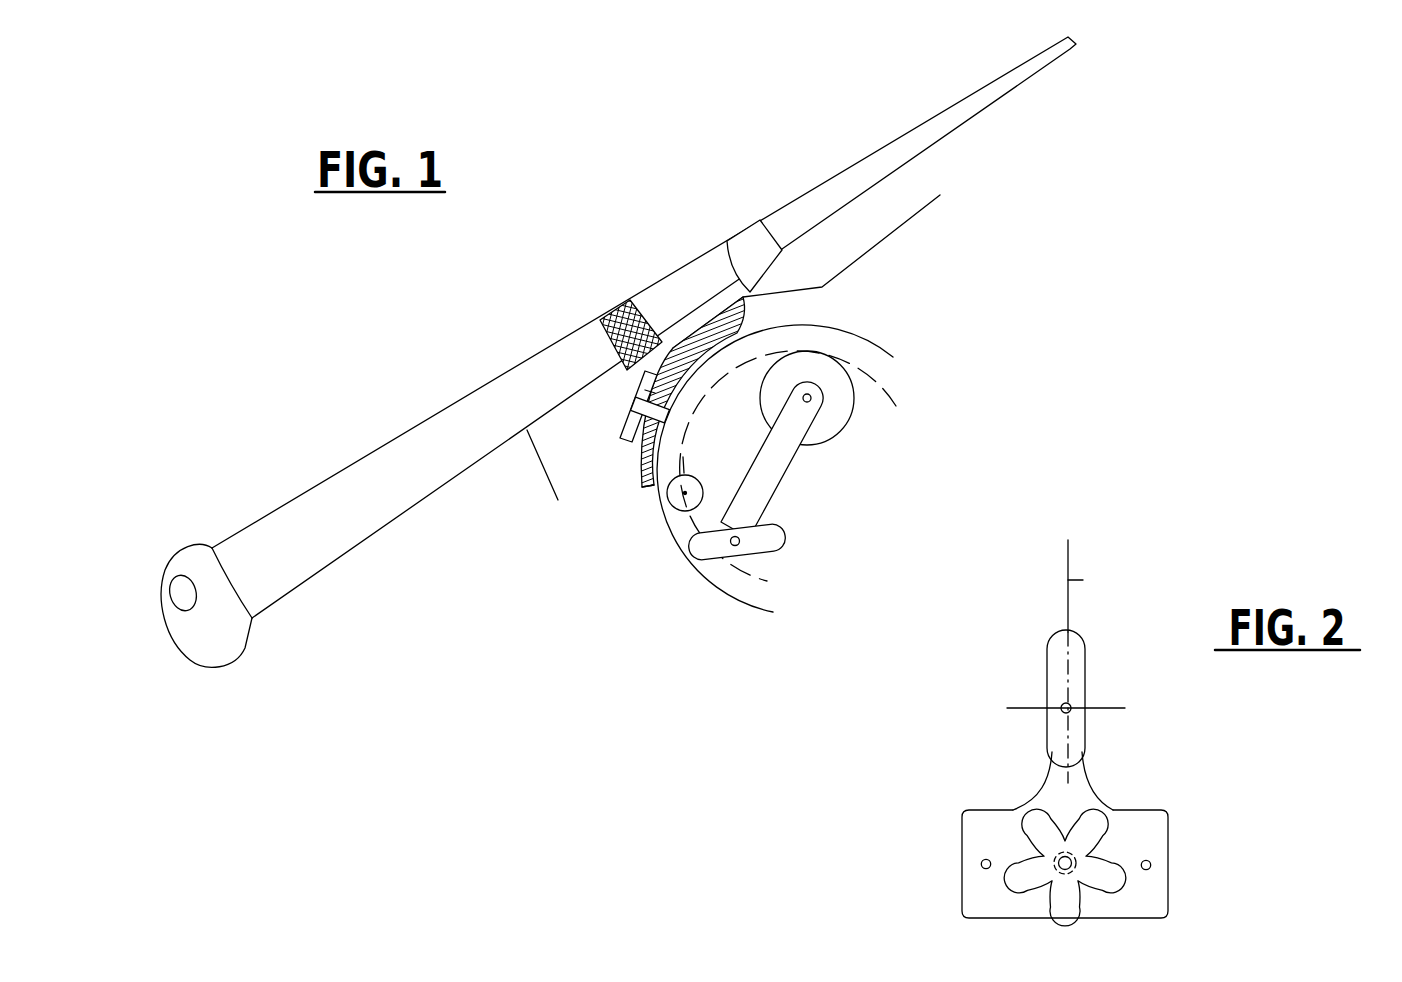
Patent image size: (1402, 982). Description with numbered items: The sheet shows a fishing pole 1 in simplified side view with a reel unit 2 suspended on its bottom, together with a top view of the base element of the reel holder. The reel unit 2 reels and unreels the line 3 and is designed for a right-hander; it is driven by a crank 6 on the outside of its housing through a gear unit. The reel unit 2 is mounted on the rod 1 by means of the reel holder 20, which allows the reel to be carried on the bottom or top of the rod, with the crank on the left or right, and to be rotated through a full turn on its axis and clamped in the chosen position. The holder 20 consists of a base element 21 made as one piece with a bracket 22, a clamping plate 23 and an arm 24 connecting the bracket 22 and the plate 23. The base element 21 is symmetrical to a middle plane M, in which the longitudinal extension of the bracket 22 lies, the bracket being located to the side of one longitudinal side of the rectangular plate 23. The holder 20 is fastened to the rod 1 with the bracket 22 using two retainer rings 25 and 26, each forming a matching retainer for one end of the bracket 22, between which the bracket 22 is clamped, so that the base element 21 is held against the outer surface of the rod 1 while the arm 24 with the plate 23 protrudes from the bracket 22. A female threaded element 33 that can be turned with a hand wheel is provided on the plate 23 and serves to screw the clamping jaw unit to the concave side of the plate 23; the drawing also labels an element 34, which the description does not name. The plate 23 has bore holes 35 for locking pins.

In FIG. 1, the fishing pole 1 is at (504, 316).
In FIG. 1, the reel unit 2 is at (869, 468).
In FIG. 1, the line 3 is at (865, 255).
In FIG. 1, the crank 6 is at (755, 510).
In FIG. 1, the reel holder 20 is at (634, 500).
In FIG. 1, the base element 21 is at (720, 323).
In FIG. 2, the base element 21 is at (1068, 712).
In FIG. 2, the bracket 22 is at (1053, 734).
In FIG. 2, the clamping plate 23 is at (1145, 913).
In FIG. 2, the arm 24 is at (1057, 775).
In FIG. 1, the retainer ring 25 is at (615, 303).
In FIG. 1, the retainer ring 26 is at (748, 240).
In FIG. 1, the female threaded element 33 is at (641, 455).
In FIG. 1, the clamping screw 34 is at (633, 408).
In FIG. 2, the bore holes 35 is at (982, 863).